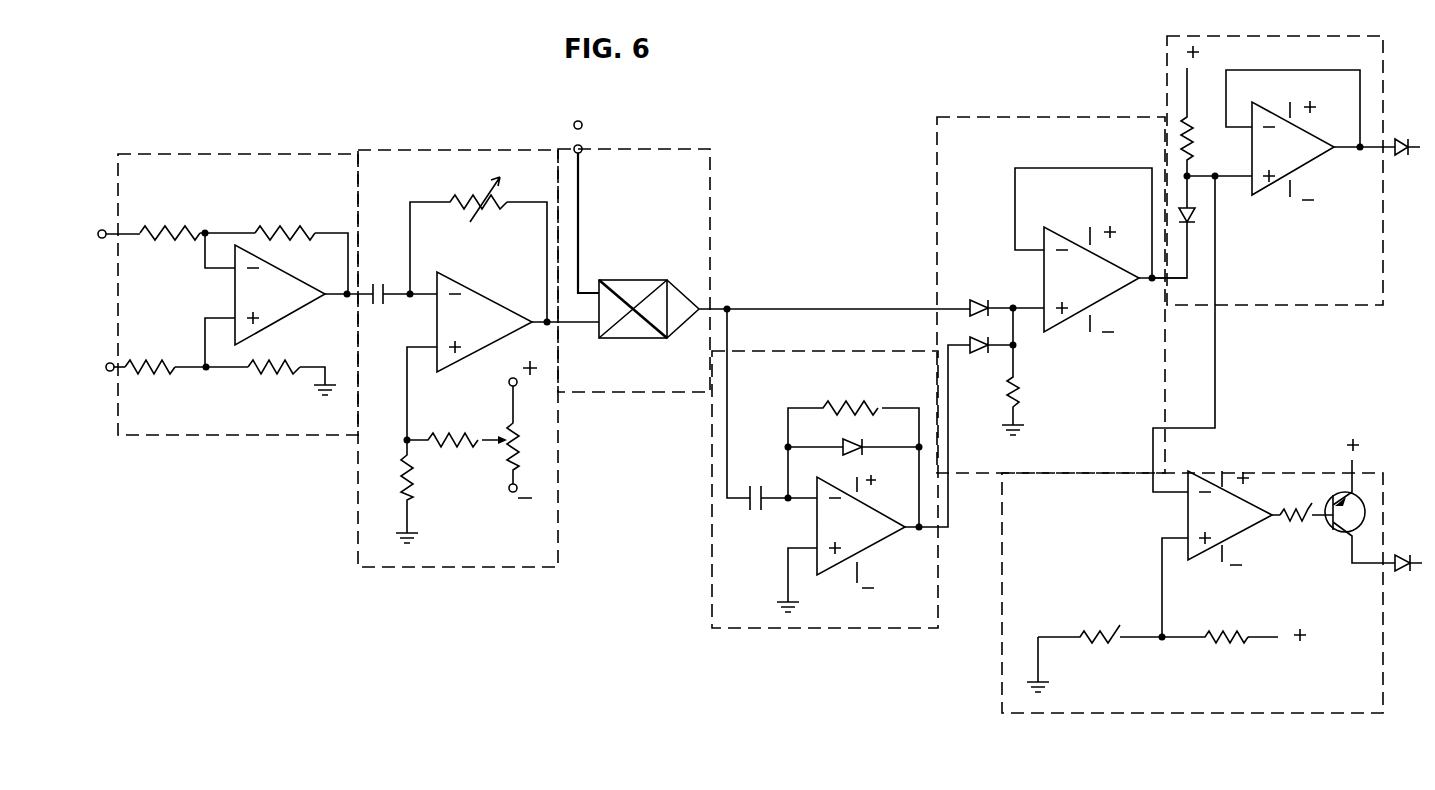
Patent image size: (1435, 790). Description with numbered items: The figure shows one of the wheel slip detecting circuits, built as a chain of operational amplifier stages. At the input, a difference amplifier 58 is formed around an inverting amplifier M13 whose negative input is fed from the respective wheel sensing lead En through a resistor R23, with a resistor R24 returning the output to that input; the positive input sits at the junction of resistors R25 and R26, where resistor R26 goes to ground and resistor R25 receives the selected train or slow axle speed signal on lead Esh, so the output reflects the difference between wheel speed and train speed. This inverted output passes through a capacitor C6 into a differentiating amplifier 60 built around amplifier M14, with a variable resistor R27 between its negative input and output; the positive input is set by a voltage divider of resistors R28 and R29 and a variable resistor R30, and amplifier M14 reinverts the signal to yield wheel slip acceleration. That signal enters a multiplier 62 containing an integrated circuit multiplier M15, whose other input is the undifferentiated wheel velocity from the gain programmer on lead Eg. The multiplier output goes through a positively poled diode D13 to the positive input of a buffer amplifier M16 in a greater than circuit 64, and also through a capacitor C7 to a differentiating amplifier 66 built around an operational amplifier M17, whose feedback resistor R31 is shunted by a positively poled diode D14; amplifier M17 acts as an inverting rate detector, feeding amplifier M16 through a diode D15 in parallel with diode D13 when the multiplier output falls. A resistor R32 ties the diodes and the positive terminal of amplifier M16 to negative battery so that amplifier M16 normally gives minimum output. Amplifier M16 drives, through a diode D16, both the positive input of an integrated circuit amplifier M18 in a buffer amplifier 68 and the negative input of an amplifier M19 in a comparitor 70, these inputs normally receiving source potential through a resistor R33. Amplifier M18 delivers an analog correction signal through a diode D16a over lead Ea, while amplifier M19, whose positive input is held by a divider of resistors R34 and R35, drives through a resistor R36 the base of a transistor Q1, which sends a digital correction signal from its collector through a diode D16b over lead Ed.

The difference amplifier 58 is at (238, 294).
The differentiating amplifier 60 is at (453, 151).
The multiplier 62 is at (634, 270).
The greater than circuit 64 is at (1051, 295).
The differentiating amplifier 66 is at (804, 335).
The buffer amplifier 68 is at (1275, 170).
The comparitor 70 is at (1192, 593).
The lead En is at (126, 232).
The lead Esh is at (126, 365).
The lead Eg is at (581, 176).
The lead Ea is at (1393, 150).
The lead Ed is at (1366, 566).
The resistor R23 is at (207, 208).
The resistor R24 is at (319, 208).
The resistor R25 is at (160, 377).
The resistor R26 is at (272, 377).
The variable resistor R27 is at (485, 214).
The resistor R28 is at (418, 478).
The resistor R29 is at (486, 412).
The variable resistor R30 is at (521, 451).
The resistor R31 is at (859, 380).
The resistor R32 is at (1022, 397).
The resistor R33 is at (1185, 125).
The resistor R34 is at (1123, 614).
The resistor R35 is at (1253, 610).
The resistor R36 is at (1286, 507).
The capacitor C6 is at (394, 270).
The capacitor C7 is at (753, 518).
The inverting amplifier M13 is at (235, 294).
The amplifier M14 is at (495, 312).
The integrated circuit multiplier M15 is at (648, 280).
The buffer amplifier M16 is at (1086, 206).
The operational amplifier M17 is at (879, 539).
The integrated circuit amplifier M18 is at (1311, 153).
The amplifier M19 is at (1192, 510).
The positively poled diode D13 is at (1009, 274).
The positively poled diode D14 is at (858, 440).
The diode D15 is at (985, 353).
The diode D16 is at (1196, 214).
The diode D16a is at (1401, 146).
The diode D16b is at (1406, 576).
The transistor Q1 is at (1340, 537).